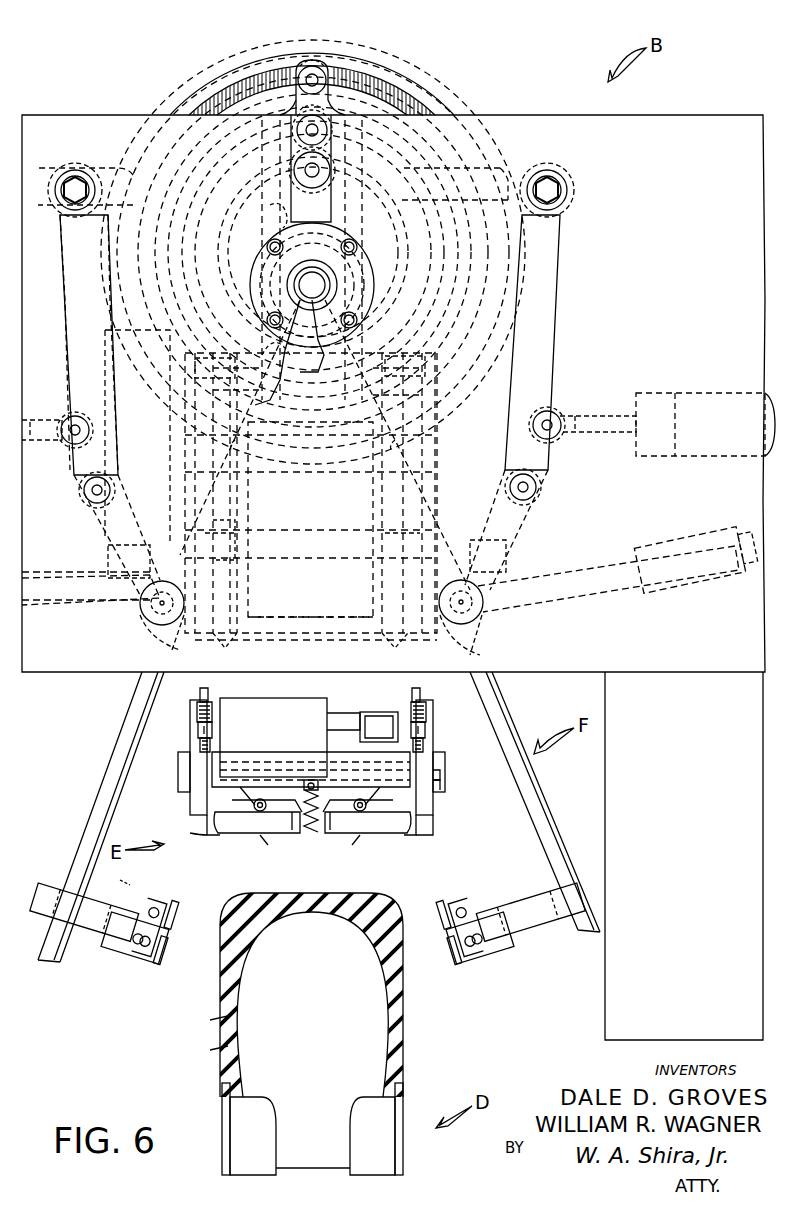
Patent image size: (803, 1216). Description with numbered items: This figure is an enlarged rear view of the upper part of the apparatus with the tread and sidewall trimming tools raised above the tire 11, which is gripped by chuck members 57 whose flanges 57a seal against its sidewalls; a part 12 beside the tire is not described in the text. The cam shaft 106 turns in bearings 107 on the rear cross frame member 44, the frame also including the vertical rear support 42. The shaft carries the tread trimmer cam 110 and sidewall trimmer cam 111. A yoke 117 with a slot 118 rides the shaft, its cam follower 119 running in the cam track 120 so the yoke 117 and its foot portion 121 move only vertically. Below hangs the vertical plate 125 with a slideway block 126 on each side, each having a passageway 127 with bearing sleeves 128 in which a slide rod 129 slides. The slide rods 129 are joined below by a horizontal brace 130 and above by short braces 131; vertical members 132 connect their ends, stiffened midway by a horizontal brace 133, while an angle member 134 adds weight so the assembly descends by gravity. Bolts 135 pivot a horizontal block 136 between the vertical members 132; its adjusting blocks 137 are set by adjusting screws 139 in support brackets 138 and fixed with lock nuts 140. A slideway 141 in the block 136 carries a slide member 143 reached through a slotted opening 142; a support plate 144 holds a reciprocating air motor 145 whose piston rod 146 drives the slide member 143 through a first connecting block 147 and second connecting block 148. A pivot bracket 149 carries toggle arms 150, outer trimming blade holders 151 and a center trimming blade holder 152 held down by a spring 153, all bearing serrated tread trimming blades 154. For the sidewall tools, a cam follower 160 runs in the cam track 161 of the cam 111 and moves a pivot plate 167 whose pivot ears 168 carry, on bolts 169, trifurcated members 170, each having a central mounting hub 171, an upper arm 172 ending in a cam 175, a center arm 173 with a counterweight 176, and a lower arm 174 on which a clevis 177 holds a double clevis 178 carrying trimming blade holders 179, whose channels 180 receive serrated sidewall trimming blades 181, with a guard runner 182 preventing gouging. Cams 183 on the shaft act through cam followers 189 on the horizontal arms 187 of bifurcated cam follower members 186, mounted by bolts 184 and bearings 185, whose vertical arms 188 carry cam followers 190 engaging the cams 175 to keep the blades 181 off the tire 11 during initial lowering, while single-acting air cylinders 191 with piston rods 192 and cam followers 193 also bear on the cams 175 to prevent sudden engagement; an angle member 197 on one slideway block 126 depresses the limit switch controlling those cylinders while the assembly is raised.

The tire 11 is at (225, 1044).
The guard 12 is at (340, 892).
The rear support 42 is at (700, 889).
The rear cross frame member 44 is at (722, 223).
The tire gripping chuck member 57 is at (238, 1172).
The flanges 57a is at (220, 1100).
The cam shaft 106 is at (326, 365).
The bearings 107 is at (270, 390).
The tread trimmer cam 110 is at (312, 58).
The sidewall trimmer cam 111 is at (170, 113).
The yoke 117 is at (335, 100).
The slot 118 is at (282, 232).
The cam follower 119 is at (326, 68).
The cam track 120 is at (400, 100).
The foot portion 121 is at (308, 356).
The vertical plate 125 is at (358, 556).
The slideway block 126 is at (240, 488).
The vertical circular passageway 127 is at (240, 458).
The bearing sleeve 128 is at (210, 424).
The slide rod 129 is at (228, 646).
The horizontal brace 130 is at (312, 640).
The short horizontal brace 131 is at (210, 395).
The vertical member 132 is at (197, 708).
The horizontal brace 133 is at (362, 530).
The angle member 134 is at (370, 612).
The bolts 135 is at (176, 780).
The horizontal block 136 is at (192, 800).
The adjusting block 137 is at (207, 828).
The adjusting screw support bracket 138 is at (176, 727).
The adjusting screws 139 is at (200, 688).
The lock nuts 140 is at (200, 742).
The slideway 141 is at (212, 762).
The slotted opening 142 is at (440, 786).
The slide member 143 is at (442, 774).
The support plate 144 is at (285, 700).
The reciprocating air motor 145 is at (350, 712).
The piston rod 146 is at (340, 708).
The first connecting block 147 is at (412, 760).
The second connecting block 148 is at (364, 714).
The pivot bracket 149 is at (215, 848).
The toggle arms 150 is at (262, 833).
The outer trimming blade holder 151 is at (262, 835).
The center trimming blade holder 152 is at (340, 835).
The spring 153 is at (312, 830).
The serrated tread trimming blades 154 is at (268, 847).
The cam follower 160 is at (304, 68).
The cam track 161 is at (432, 264).
The pivot plate 167 is at (420, 476).
The pivot ears 168 is at (150, 573).
The bolts 169 is at (142, 614).
The trifurcated member 170 is at (612, 510).
The central mounting hub 171 is at (150, 640).
The upper arm 172 is at (140, 554).
The center arm 173 is at (76, 606).
The lower arm 174 is at (70, 848).
The cams 175 is at (458, 312).
The counterweights 176 is at (684, 612).
The clevis 177 is at (54, 888).
The double clevis 178 is at (118, 946).
The trimming blade holders 179 is at (150, 896).
The trimming blade receiving channel 180 is at (168, 935).
The serrated sidewall trimming blade 181 is at (176, 910).
The guard runner 182 is at (192, 895).
The cams 183 is at (270, 206).
The bolts 184 is at (78, 186).
The bearings 185 is at (72, 170).
The bifurcated cam follower members 186 is at (48, 100).
The horizontal arm 187 is at (133, 168).
The vertical arm 188 is at (64, 350).
The cam followers 189 is at (296, 170).
The rotatable cam follower 190 is at (82, 496).
The single-acting air cylinders 191 is at (688, 392).
The piston rods 192 is at (40, 446).
The cam followers 193 is at (76, 414).
The angle member 197 is at (248, 558).